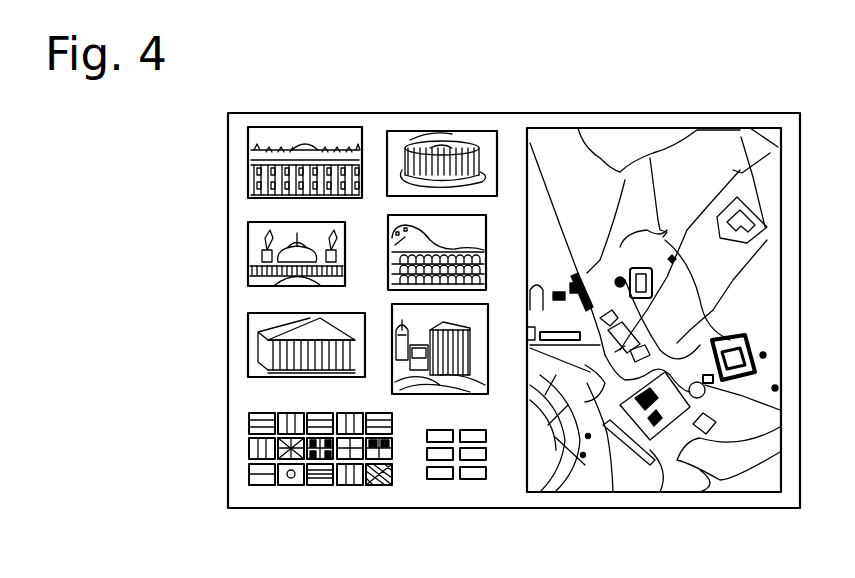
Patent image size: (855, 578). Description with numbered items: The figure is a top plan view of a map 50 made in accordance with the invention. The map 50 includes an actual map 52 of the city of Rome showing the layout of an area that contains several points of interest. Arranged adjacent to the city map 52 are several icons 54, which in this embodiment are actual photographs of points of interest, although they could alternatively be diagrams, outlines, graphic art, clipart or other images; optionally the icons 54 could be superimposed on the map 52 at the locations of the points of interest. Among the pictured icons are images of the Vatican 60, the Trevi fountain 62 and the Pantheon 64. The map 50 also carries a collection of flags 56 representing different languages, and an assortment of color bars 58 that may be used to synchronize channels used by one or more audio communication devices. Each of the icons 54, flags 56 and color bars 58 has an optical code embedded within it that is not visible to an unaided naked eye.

The map 50 is at (175, 273).
The actual map 52 is at (640, 135).
The icons 54 is at (207, 188).
The flags 56 is at (230, 445).
The color bars 58 is at (425, 490).
The Vatican 60 is at (310, 138).
The Trevi fountain 62 is at (457, 147).
The Pantheon 64 is at (273, 360).